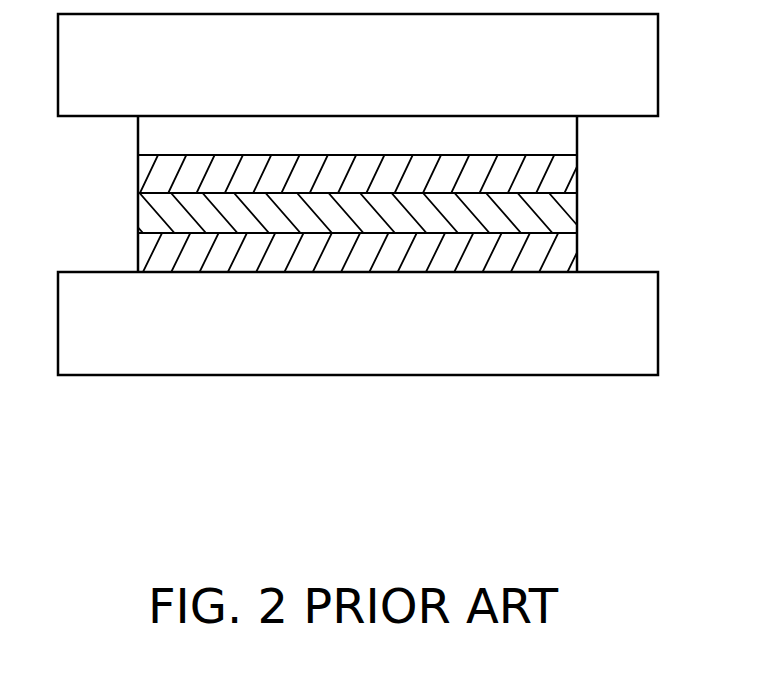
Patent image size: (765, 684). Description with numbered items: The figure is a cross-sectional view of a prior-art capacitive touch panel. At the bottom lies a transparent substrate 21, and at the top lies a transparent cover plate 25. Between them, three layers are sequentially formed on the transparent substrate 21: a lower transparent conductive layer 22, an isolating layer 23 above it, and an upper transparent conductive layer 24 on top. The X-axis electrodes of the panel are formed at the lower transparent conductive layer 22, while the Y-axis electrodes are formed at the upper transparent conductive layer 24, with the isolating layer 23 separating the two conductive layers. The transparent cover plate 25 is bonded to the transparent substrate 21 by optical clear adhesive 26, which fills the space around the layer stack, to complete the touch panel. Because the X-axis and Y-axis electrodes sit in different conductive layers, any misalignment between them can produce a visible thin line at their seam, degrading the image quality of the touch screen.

The transparent substrate 21 is at (639, 331).
The lower transparent conductive layer 22 is at (563, 254).
The isolating layer 23 is at (563, 219).
The upper transparent conductive layer 24 is at (563, 173).
The transparent cover plate 25 is at (639, 64).
The optical clear adhesive 26 is at (166, 141).